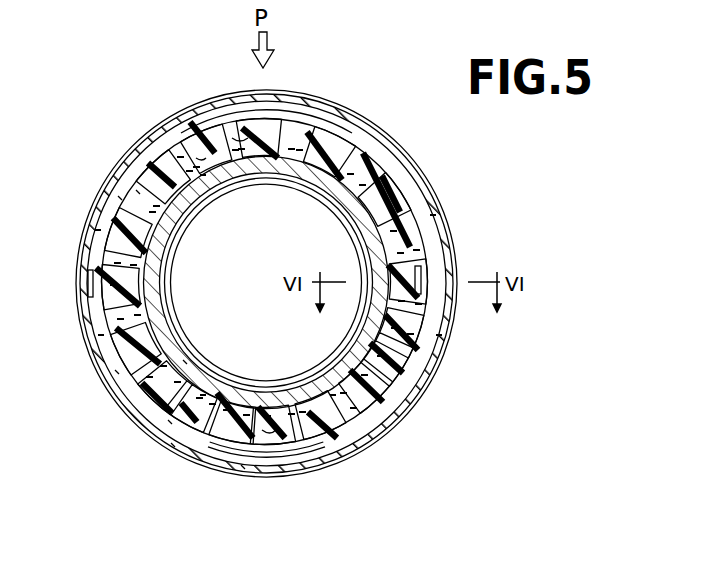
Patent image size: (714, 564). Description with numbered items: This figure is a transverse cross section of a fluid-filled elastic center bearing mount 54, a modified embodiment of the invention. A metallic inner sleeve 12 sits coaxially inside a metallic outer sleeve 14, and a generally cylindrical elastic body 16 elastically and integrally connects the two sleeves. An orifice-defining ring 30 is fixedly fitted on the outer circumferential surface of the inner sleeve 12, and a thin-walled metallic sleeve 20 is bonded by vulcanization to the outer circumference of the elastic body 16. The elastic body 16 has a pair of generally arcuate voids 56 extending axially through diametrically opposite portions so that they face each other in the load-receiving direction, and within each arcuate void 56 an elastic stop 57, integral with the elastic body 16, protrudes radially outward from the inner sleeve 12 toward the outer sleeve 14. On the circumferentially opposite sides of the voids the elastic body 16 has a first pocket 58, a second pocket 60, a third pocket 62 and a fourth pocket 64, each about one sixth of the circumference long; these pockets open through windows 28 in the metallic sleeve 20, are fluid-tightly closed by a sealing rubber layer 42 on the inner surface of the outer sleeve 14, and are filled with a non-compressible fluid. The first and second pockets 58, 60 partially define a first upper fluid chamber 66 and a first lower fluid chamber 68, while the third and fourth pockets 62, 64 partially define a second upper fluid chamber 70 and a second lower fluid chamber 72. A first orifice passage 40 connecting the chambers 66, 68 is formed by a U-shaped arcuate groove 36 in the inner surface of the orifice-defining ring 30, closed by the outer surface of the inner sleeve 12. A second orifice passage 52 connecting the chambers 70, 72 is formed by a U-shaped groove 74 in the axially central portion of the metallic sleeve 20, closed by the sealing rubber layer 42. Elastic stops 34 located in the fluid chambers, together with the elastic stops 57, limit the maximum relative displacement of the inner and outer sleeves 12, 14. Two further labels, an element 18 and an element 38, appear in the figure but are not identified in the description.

The inner sleeve 12 is at (303, 179).
The outer sleeve 14 is at (447, 347).
The elastic body 16 is at (105, 282).
The inner raceway 18 is at (333, 356).
The metallic sleeve 20 is at (243, 465).
The windows 28 is at (417, 243).
The orifice-defining ring 30 is at (233, 174).
The elastic stops 34 is at (167, 167).
The U-shaped arcuate groove 36 is at (160, 275).
The inner ring edge 38 is at (138, 190).
The first orifice passage 40 is at (160, 317).
The sealing rubber layer 42 is at (173, 443).
The second orifice passage 52 is at (432, 290).
The fluid-filled elastic center bearing mount 54 is at (369, 70).
The arcuate voids 56 is at (291, 122).
The elastic stop 57 is at (238, 136).
The first pocket 58 is at (200, 156).
The second pocket 60 is at (170, 420).
The third pocket 62 is at (333, 166).
The fourth pocket 64 is at (365, 425).
The first upper fluid chamber 66 is at (118, 198).
The first lower fluid chamber 68 is at (117, 370).
The second upper fluid chamber 70 is at (413, 193).
The second lower fluid chamber 72 is at (417, 368).
The U-shaped groove 74 is at (428, 270).